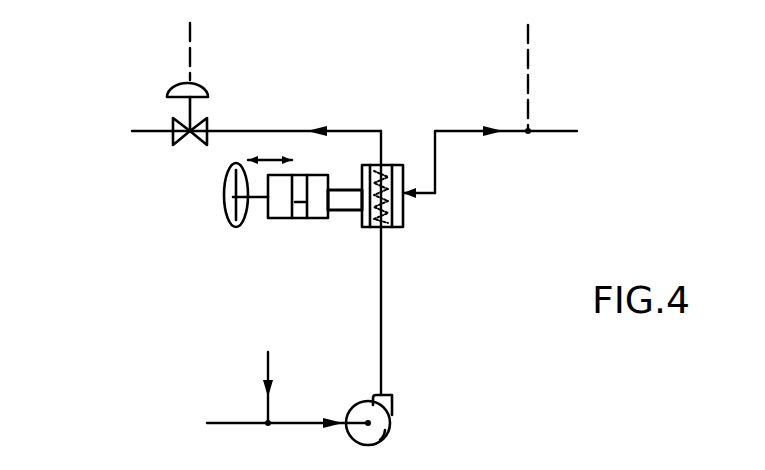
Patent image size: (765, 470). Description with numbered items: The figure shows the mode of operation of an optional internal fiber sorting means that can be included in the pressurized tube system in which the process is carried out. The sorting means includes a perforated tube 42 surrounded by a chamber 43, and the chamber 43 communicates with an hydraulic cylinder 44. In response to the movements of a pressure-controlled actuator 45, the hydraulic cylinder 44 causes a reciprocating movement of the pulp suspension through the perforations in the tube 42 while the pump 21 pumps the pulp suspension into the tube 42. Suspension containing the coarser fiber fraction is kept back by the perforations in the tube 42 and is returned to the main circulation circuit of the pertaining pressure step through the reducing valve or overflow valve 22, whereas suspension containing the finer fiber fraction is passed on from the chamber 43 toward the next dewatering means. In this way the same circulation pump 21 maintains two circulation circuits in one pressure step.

The reducing valve or overflow valve 22 is at (170, 85).
The actuator 45 is at (225, 203).
The hydraulic cylinder 44 is at (280, 218).
The perforated tube 42 is at (360, 222).
The chamber 43 is at (403, 207).
The pump 21 is at (393, 428).